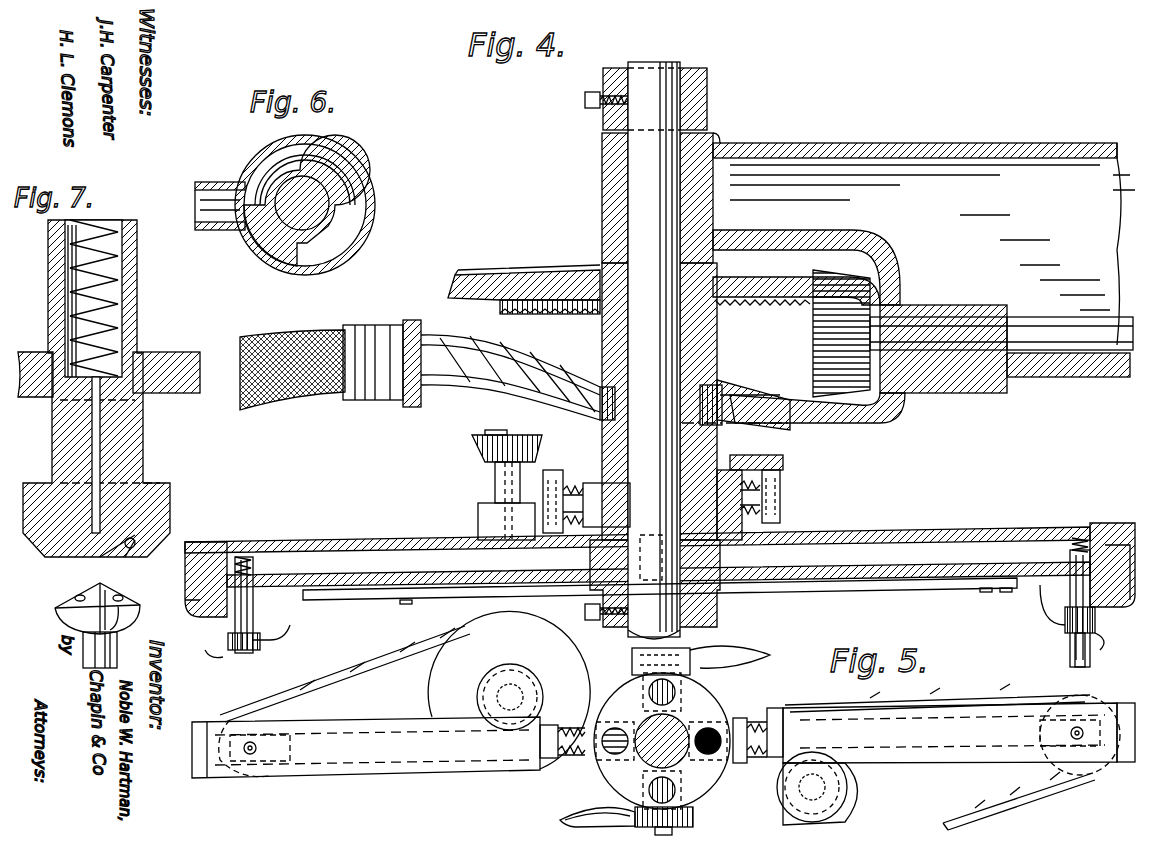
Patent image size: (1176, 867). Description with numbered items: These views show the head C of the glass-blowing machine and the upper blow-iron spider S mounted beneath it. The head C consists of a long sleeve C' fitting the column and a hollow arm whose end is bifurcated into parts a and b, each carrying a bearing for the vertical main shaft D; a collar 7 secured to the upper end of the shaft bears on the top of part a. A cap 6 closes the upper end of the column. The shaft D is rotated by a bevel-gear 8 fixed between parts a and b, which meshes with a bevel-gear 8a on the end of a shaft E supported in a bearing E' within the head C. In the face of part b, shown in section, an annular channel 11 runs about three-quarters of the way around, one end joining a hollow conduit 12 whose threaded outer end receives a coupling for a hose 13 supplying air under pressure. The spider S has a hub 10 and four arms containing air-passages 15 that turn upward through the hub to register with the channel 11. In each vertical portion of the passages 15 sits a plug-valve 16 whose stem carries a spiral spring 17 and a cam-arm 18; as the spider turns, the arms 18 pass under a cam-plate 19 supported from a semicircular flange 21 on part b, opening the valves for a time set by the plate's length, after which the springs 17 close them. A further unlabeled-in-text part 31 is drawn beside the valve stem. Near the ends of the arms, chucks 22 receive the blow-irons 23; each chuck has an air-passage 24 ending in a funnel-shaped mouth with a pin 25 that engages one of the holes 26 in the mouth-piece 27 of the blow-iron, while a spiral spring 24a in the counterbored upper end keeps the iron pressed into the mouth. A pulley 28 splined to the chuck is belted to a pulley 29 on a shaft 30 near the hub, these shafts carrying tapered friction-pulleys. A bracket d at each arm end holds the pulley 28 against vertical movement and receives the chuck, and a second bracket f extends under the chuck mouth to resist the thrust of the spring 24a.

In FIG. 4, the cap 6 is at (585, 425).
In FIG. 4, the collar 7 is at (600, 124).
In FIG. 4, the bevel-gear 8 is at (512, 282).
In FIG. 4, the bevel-gear 8a is at (815, 318).
In FIG. 4, the hub 10 is at (715, 618).
In FIG. 5, the hub 10 is at (705, 700).
In FIG. 4, the annular channel 11 is at (700, 410).
In FIG. 6, the annular channel 11 is at (355, 210).
In FIG. 4, the hollow arm or conduit 12 is at (470, 380).
In FIG. 6, the hollow arm or conduit 12 is at (208, 182).
In FIG. 4, the hose 13 is at (292, 350).
In FIG. 4, the air-passages 15 is at (500, 475).
In FIG. 5, the air-passages 15 is at (650, 690).
In FIG. 4, the plug-valve 16 is at (590, 490).
In FIG. 5, the plug-valve 16 is at (745, 720).
In FIG. 4, the spiral springs 17 is at (762, 505).
In FIG. 5, the spiral springs 17 is at (572, 725).
In FIG. 4, the cam-arm 18 is at (782, 490).
In FIG. 5, the cam-arm 18 is at (540, 745).
In FIG. 4, the cam-plate 19 is at (850, 440).
In FIG. 4, the semicircular flange 21 is at (762, 430).
In FIG. 4, the chucks 22 is at (230, 620).
In FIG. 7, the chucks 22 is at (135, 408).
In FIG. 4, the blow-irons 23 is at (1090, 660).
In FIG. 7, the air-passage 24 is at (100, 455).
In FIG. 7, the spiral spring 24a is at (105, 298).
In FIG. 7, the pin 25 is at (122, 555).
In FIG. 7, the holes 26 is at (78, 590).
In FIG. 7, the mouth-piece 27 is at (118, 625).
In FIG. 4, the pulley 28 is at (270, 580).
In FIG. 5, the pulley 28 is at (330, 686).
In FIG. 7, the pulley 28 is at (165, 352).
In FIG. 4, the pulley 29 is at (450, 602).
In FIG. 5, the pulley 29 is at (570, 820).
In FIG. 4, the shafts 30 is at (495, 495).
In FIG. 5, the shafts 30 is at (825, 787).
In FIG. 4, the screw 31 is at (472, 447).
In FIG. 4, the part of bifurcated end a is at (600, 170).
In FIG. 4, the part of bifurcated end b is at (600, 365).
In FIG. 6, the part of bifurcated end b is at (340, 150).
In FIG. 4, the head C is at (932, 244).
In FIG. 4, the sleeve C' is at (915, 212).
In FIG. 4, the main shaft D is at (650, 185).
In FIG. 5, the main shaft D is at (662, 741).
In FIG. 6, the main shaft D is at (315, 188).
In FIG. 4, the shaft E is at (1001, 320).
In FIG. 4, the bearing E' is at (1005, 332).
In FIG. 4, the upper blow-iron spider S is at (1030, 525).
In FIG. 5, the upper blow-iron spider S is at (663, 736).
In FIG. 4, the bracket d is at (190, 582).
In FIG. 5, the bracket d is at (1128, 765).
In FIG. 4, the bracket f is at (325, 602).